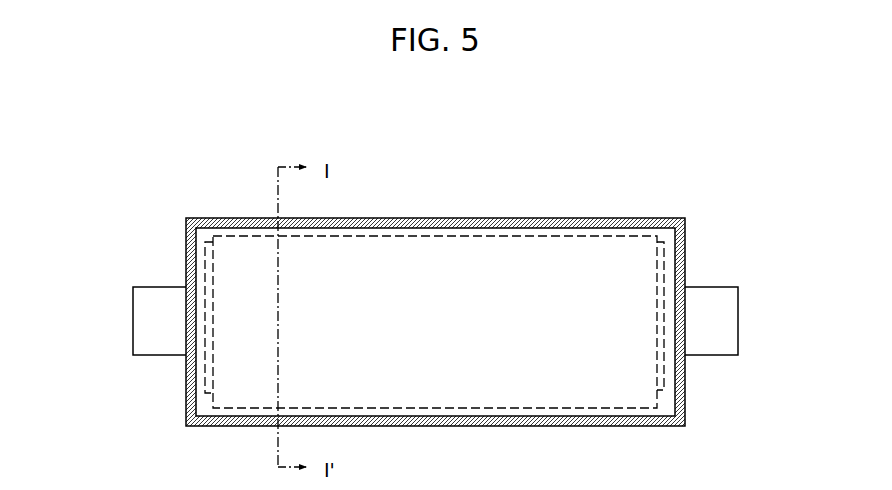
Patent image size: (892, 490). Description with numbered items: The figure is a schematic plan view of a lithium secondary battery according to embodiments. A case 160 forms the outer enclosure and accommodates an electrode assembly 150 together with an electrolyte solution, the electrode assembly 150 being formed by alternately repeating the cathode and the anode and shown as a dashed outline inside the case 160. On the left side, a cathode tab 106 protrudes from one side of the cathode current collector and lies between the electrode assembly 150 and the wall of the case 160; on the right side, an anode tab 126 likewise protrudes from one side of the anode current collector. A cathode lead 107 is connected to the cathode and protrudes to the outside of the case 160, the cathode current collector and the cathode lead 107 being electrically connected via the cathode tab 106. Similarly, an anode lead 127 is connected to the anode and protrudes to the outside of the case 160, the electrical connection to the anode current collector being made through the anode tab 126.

The case 160 is at (488, 214).
The electrode assembly 150 is at (586, 231).
The cathode tab 106 is at (205, 387).
The anode tab 126 is at (664, 386).
The cathode lead 107 is at (140, 322).
The anode lead 127 is at (731, 320).